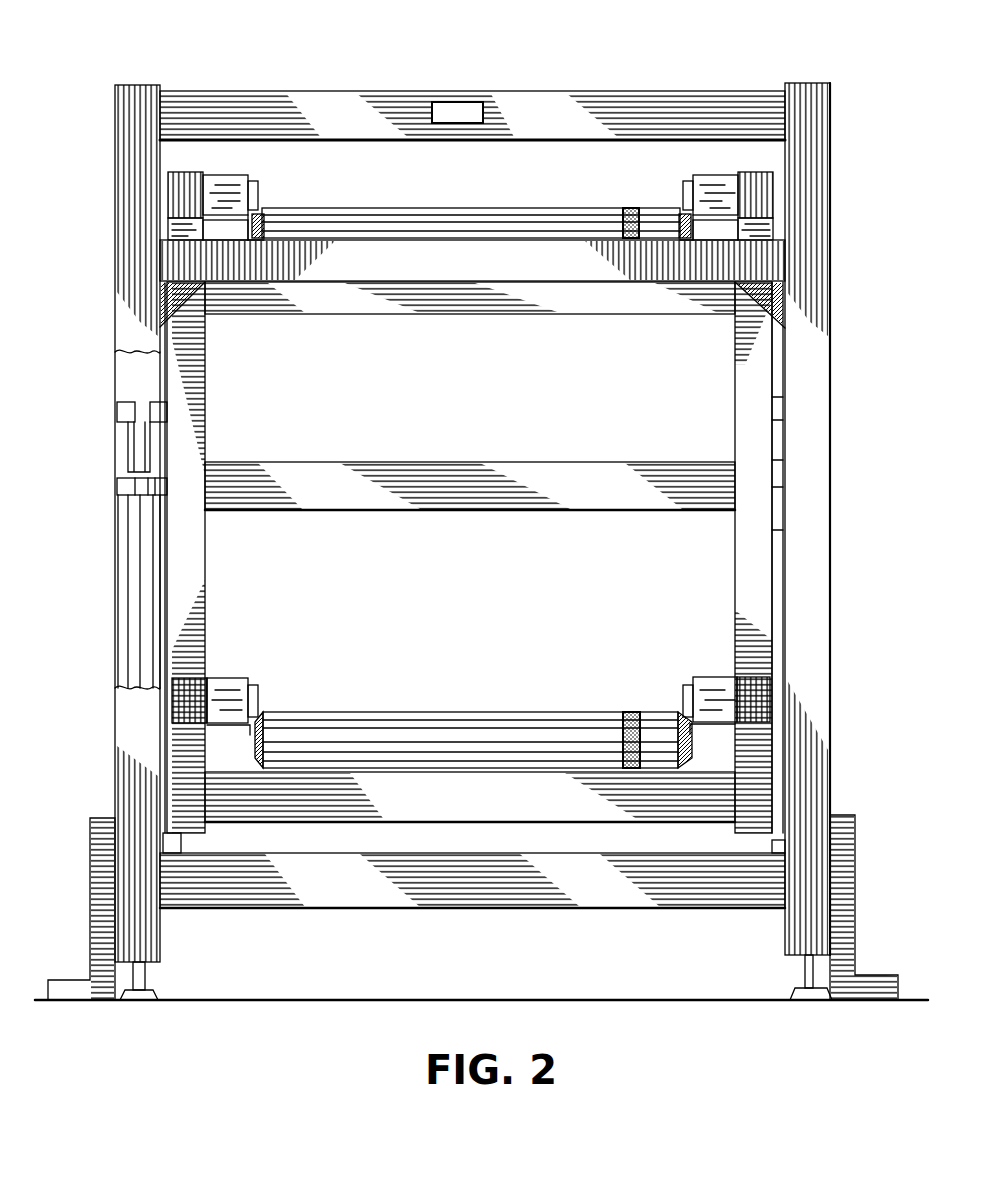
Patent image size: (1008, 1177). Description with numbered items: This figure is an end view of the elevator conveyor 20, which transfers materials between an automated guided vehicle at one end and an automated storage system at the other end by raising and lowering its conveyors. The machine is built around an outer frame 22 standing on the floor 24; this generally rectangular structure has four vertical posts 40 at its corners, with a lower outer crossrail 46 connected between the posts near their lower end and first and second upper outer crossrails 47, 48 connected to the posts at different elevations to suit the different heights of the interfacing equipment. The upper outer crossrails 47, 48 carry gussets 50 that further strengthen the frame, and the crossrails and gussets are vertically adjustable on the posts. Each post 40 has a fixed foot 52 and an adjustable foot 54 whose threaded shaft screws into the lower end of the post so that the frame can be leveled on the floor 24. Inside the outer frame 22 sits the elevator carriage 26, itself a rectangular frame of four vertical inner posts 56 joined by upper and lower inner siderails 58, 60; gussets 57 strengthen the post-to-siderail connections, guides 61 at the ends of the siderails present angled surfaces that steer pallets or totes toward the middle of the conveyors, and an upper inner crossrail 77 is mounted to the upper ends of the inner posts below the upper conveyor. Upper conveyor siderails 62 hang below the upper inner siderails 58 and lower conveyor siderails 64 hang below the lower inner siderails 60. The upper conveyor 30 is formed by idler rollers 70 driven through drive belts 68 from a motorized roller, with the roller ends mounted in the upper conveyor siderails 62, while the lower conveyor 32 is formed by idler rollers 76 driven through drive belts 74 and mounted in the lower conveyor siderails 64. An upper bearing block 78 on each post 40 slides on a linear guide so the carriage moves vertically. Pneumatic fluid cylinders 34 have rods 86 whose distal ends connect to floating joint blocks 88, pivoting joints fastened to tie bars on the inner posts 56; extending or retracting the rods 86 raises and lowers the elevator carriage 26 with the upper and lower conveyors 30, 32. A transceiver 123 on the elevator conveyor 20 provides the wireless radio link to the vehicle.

The elevator conveyor 20 is at (653, 31).
The outer frame 22 is at (832, 364).
The floor 24 is at (362, 1004).
The elevator carriage 26 is at (474, 567).
The upper conveyor 30 is at (471, 192).
The lower conveyor 32 is at (473, 715).
The pneumatic fluid cylinder 34 is at (122, 541).
The vertical post 40 is at (118, 380).
The lower outer crossrail 46 is at (485, 907).
The first upper outer crossrail 47 is at (548, 263).
The second upper outer crossrail 48 is at (474, 465).
The gusset 50 is at (178, 296).
The fixed foot 52 is at (106, 949).
The adjustable foot 54 is at (163, 1000).
The vertical inner post 56 is at (203, 558).
The gusset 57 is at (180, 184).
The upper inner siderail 58 is at (222, 185).
The lower inner siderail 60 is at (226, 680).
The guide 61 is at (255, 187).
The upper conveyor siderail 62 is at (263, 222).
The lower conveyor siderail 64 is at (266, 722).
The drive belt 68 is at (629, 208).
The idler roller 70 is at (468, 209).
The drive belt 74 is at (630, 712).
The idler roller 76 is at (510, 712).
The upper inner crossrail 77 is at (362, 312).
The upper bearing block 78 is at (450, 812).
The cylinder rod 86 is at (135, 487).
The floating joint block 88 is at (128, 445).
The transceiver 123 is at (456, 103).